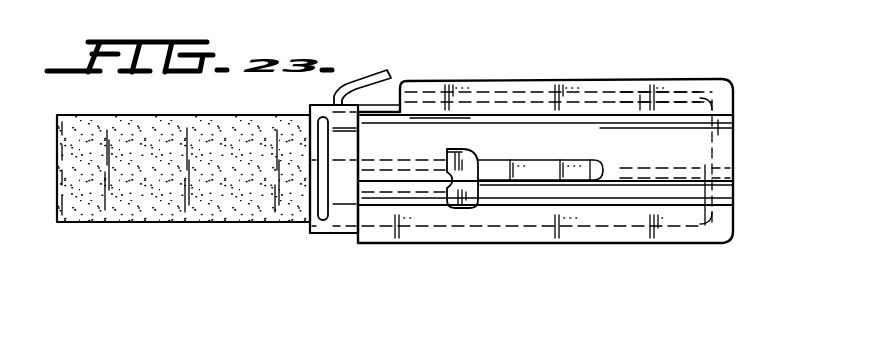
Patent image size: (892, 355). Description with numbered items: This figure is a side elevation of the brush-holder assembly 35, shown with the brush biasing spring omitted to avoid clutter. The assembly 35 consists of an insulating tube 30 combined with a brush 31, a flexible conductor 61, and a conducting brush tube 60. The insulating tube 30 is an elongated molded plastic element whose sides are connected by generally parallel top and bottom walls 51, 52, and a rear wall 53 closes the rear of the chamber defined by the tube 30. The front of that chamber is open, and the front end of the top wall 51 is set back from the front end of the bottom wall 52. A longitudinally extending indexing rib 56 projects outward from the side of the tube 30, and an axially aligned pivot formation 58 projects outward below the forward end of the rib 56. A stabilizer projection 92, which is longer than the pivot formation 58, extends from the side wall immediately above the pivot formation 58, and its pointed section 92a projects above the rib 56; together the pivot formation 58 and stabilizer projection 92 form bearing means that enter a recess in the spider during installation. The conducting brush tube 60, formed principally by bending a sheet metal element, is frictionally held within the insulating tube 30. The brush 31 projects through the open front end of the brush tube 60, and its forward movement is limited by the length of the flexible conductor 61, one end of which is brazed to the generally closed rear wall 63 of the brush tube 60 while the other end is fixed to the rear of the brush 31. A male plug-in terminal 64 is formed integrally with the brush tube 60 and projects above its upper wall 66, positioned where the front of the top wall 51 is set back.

The insulating tube 30 is at (540, 248).
The brush 31 is at (200, 228).
The brush-holder assembly 35 is at (462, 68).
The top wall 51 is at (573, 82).
The bottom wall 52 is at (590, 245).
The rear wall 53 is at (727, 130).
The indexing rib 56 is at (540, 154).
The pivot formation 58 is at (438, 235).
The conducting brush tube 60 is at (335, 236).
The flexible conductor 61 is at (670, 150).
The rear wall 63 is at (725, 158).
The male plug-in terminal 64 is at (372, 72).
The upper wall 66 is at (642, 100).
The stabilizer projection 92 is at (460, 150).
The pointed section 92a is at (447, 152).